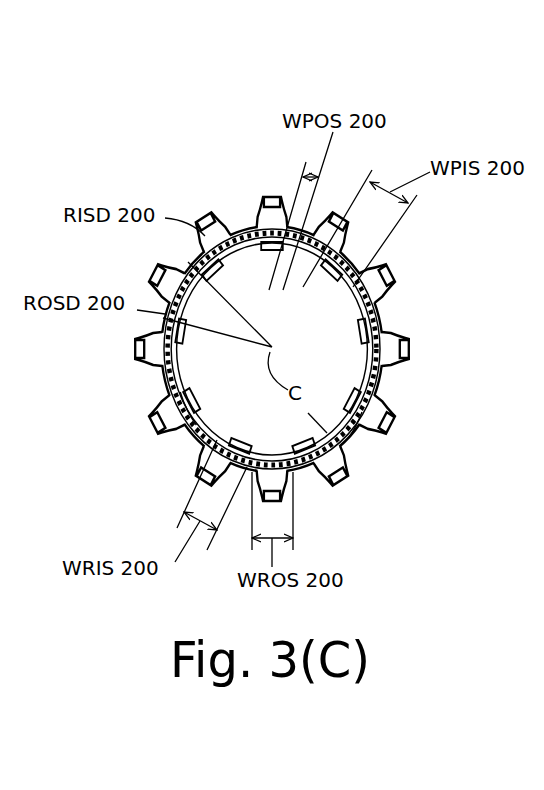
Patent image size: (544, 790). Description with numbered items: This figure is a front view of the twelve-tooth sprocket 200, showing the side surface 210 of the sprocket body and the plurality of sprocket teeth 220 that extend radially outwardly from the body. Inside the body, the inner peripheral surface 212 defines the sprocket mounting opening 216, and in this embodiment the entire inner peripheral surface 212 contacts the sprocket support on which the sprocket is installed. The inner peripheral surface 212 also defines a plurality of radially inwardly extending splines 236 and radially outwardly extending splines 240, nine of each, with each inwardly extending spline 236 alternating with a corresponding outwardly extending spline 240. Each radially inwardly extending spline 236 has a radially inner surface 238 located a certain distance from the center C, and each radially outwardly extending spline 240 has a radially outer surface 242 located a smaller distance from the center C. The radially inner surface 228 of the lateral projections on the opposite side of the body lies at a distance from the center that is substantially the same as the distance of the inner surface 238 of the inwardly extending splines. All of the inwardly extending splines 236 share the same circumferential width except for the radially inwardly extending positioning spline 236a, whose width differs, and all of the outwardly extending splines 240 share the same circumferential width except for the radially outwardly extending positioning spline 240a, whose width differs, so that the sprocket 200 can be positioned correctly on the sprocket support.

The sprocket 200 is at (422, 100).
The side surface 210 is at (393, 276).
The inner peripheral surface 212 is at (208, 400).
The sprocket mounting opening 216 is at (345, 460).
The sprocket teeth 220 is at (207, 220).
The radially inner surface 228 is at (410, 356).
The radially inwardly extending spline 236 is at (177, 424).
The radially inwardly extending positioning spline 236a is at (338, 257).
The radially inner surface 238 is at (167, 390).
The radially outwardly extending spline 240 is at (350, 437).
The radially outwardly extending positioning spline 240a is at (300, 235).
The radially outer surface 242 is at (370, 417).